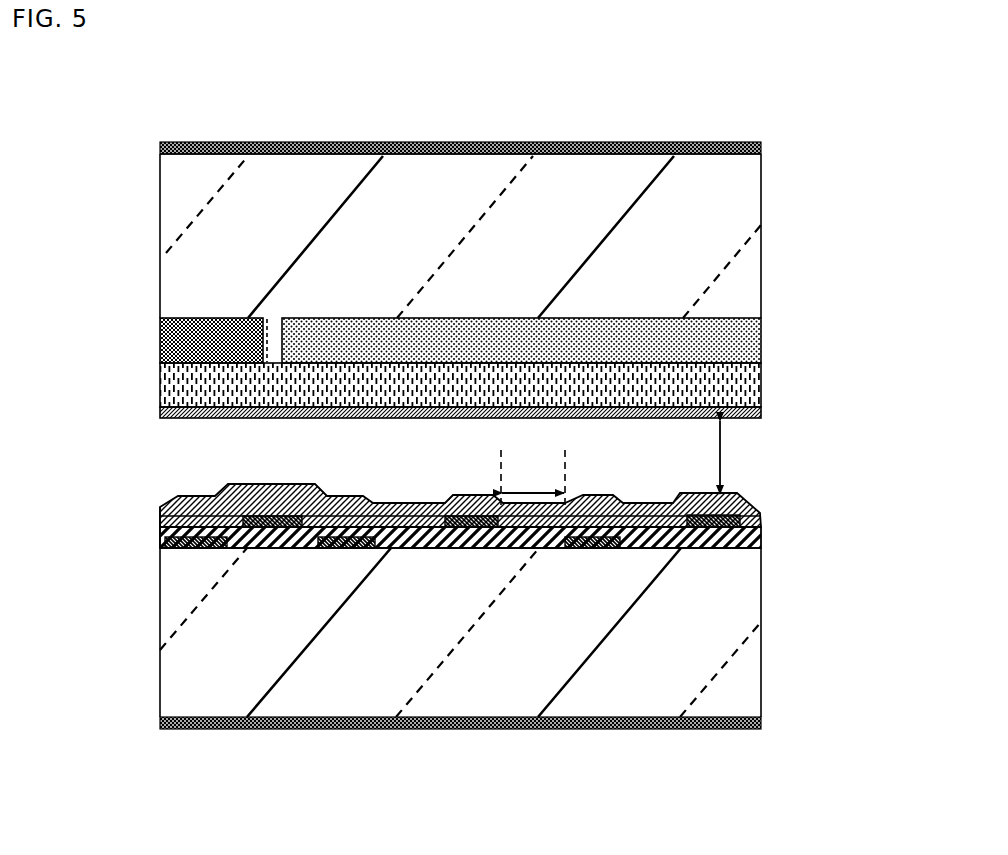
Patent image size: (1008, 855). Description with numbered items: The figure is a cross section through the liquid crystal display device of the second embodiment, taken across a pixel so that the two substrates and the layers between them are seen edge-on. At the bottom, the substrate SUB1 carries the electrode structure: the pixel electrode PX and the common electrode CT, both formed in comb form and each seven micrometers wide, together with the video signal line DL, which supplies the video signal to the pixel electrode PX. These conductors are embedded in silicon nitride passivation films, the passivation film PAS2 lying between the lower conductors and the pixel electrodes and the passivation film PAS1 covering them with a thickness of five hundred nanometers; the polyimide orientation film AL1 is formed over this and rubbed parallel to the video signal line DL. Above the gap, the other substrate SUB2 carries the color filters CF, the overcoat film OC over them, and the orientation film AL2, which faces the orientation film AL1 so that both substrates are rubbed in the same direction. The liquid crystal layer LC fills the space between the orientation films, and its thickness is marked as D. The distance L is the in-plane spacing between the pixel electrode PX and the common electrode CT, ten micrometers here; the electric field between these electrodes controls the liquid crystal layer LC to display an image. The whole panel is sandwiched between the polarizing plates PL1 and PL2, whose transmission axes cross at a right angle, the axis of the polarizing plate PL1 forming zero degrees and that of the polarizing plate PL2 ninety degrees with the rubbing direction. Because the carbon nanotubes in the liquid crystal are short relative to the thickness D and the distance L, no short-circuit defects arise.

The polarizing plate PL2 is at (160, 143).
The substrate SUB2 is at (182, 218).
The color filters CF is at (160, 345).
The overcoat film OC is at (742, 385).
The orientation film AL2 is at (765, 419).
The liquid crystal layer LC is at (168, 431).
The thickness of the liquid crystal layer D is at (703, 457).
The distance between the pixel electrode and the common electrode L is at (533, 478).
The orientation film AL1 is at (760, 513).
The passivation film PAS1 is at (162, 513).
The pixel electrode PX is at (463, 550).
The passivation film PAS2 is at (162, 547).
The common electrode CT is at (200, 549).
The video signal line DL is at (265, 549).
The substrate SUB1 is at (182, 660).
The polarizing plate PL1 is at (168, 729).